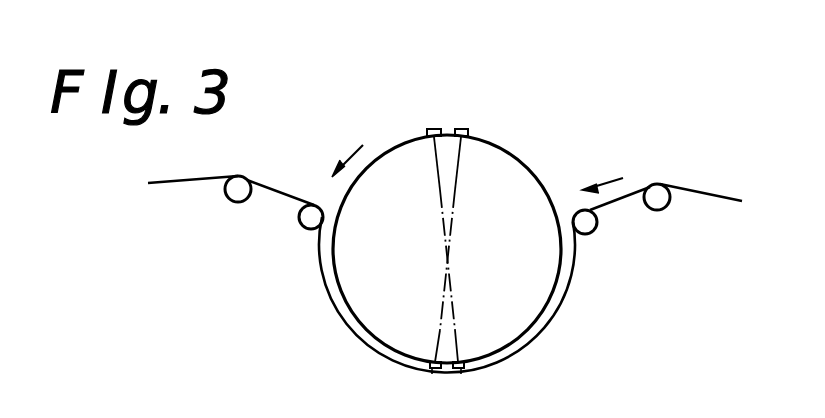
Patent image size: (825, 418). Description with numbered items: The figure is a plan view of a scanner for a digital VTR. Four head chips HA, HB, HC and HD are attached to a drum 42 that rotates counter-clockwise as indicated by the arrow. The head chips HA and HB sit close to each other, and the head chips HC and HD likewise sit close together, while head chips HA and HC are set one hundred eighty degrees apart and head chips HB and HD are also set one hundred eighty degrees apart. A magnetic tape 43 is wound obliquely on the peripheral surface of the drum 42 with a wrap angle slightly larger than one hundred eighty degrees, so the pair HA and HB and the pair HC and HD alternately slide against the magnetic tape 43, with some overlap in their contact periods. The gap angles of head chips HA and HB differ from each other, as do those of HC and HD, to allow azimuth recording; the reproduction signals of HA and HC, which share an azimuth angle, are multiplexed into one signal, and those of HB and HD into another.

The drum 42 is at (539, 179).
The magnetic tape 43 is at (618, 206).
The head chip HA is at (462, 369).
The head chip HB is at (431, 369).
The head chip HC is at (434, 130).
The head chip HD is at (464, 130).